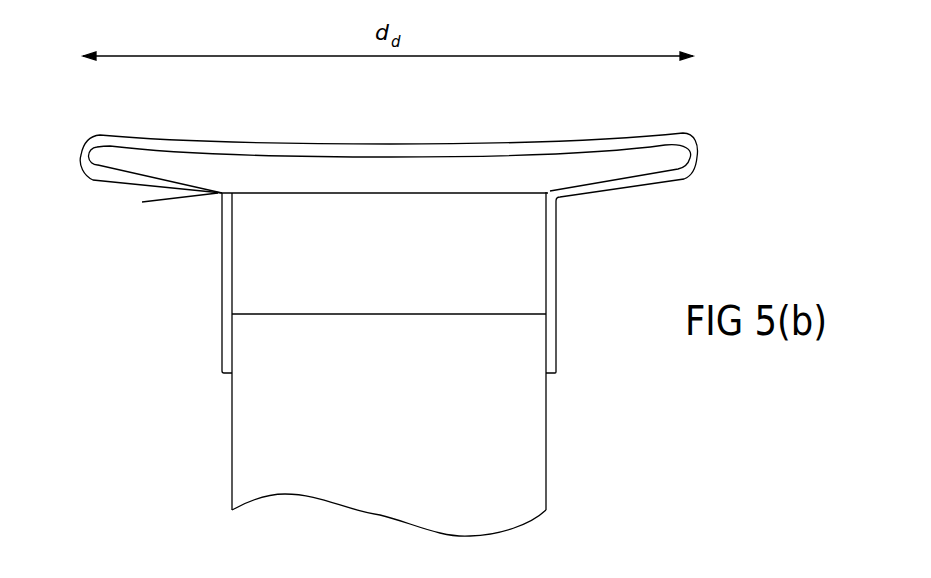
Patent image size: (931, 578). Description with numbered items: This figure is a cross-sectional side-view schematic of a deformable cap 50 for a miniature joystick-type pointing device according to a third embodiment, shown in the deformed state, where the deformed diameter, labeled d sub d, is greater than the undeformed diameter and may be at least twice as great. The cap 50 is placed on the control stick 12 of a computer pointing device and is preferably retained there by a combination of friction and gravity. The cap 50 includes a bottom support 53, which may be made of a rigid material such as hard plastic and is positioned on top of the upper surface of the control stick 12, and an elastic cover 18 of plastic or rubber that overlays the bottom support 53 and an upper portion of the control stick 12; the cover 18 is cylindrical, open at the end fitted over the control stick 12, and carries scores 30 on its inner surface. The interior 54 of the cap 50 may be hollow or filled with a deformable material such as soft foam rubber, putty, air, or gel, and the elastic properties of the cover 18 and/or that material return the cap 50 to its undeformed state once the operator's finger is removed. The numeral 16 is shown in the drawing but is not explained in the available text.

The control stick 12 is at (507, 485).
The strip 16 is at (147, 140).
The elastic cover 18 is at (93, 143).
The scores 30 is at (90, 155).
The cap 50 is at (720, 143).
The bottom support 53 is at (507, 303).
The interior 54 is at (320, 181).